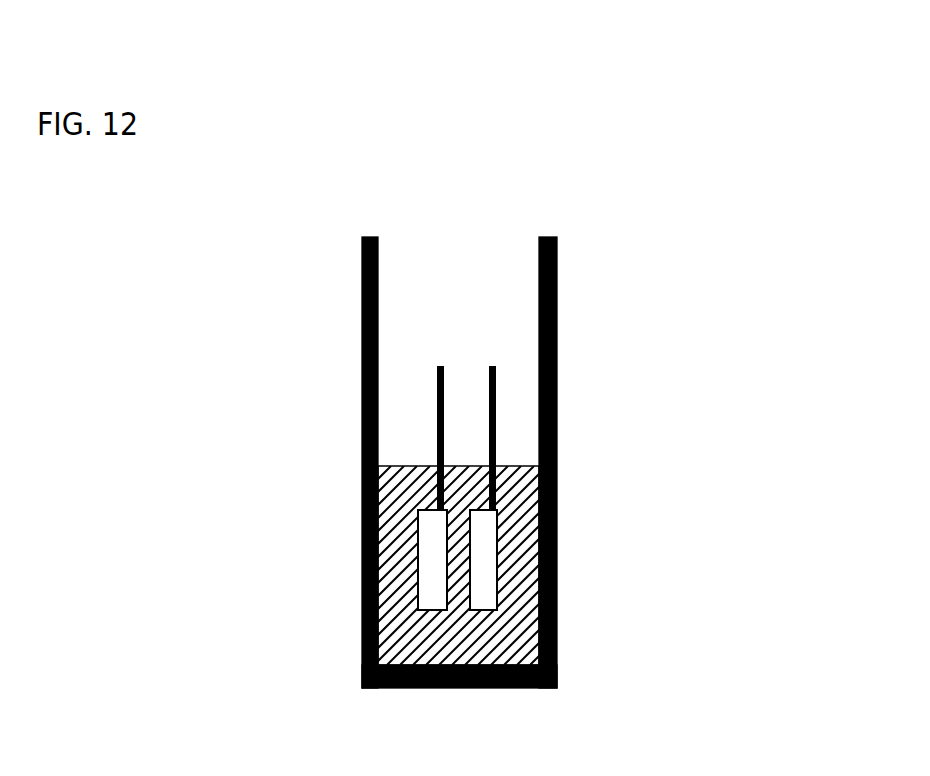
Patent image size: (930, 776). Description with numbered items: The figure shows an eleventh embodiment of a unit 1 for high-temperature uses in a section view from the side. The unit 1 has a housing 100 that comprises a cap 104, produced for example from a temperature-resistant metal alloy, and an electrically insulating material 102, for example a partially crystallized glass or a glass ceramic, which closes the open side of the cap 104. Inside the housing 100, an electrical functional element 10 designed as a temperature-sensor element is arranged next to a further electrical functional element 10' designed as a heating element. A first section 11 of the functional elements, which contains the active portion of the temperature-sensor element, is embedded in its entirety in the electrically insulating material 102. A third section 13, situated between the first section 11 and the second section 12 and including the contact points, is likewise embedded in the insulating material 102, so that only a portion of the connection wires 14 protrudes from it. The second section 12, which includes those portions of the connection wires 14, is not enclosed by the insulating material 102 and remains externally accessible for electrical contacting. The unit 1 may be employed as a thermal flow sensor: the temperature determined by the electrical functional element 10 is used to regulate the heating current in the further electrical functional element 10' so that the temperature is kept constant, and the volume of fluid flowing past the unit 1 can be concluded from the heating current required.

The unit 1 is at (657, 202).
The housing 100 is at (627, 305).
The electrically insulating material 102 is at (360, 573).
The cap 104 is at (362, 618).
The electrical functional element 10 is at (353, 479).
The further electrical functional element 10' is at (565, 465).
The connection wires 14 is at (437, 385).
The first section 11 is at (637, 528).
The second section 12 is at (637, 365).
The third section 13 is at (641, 468).